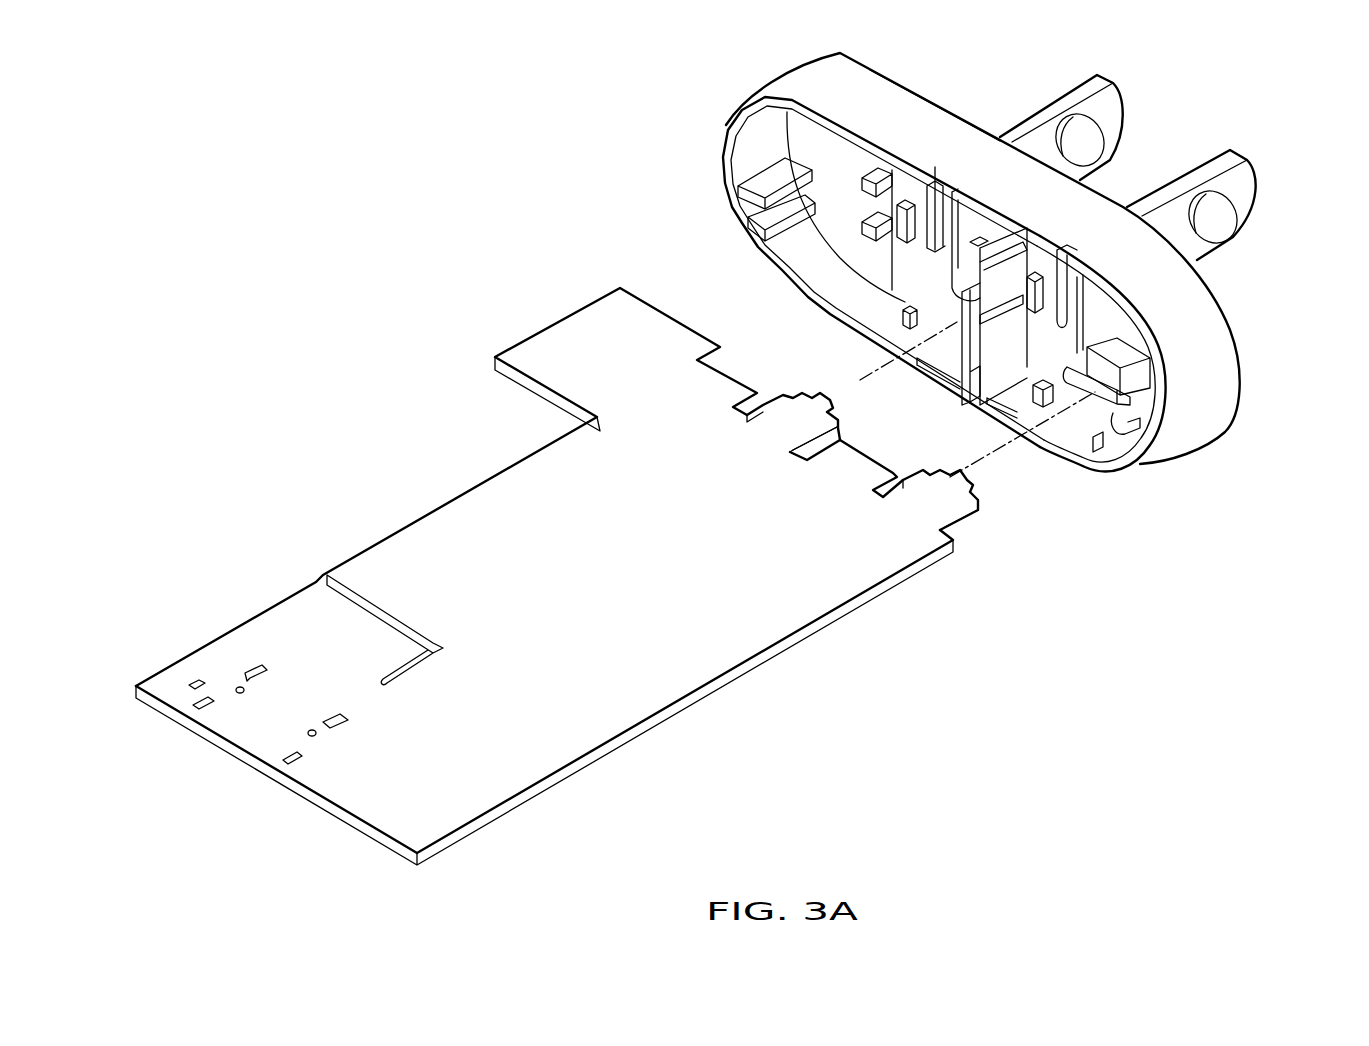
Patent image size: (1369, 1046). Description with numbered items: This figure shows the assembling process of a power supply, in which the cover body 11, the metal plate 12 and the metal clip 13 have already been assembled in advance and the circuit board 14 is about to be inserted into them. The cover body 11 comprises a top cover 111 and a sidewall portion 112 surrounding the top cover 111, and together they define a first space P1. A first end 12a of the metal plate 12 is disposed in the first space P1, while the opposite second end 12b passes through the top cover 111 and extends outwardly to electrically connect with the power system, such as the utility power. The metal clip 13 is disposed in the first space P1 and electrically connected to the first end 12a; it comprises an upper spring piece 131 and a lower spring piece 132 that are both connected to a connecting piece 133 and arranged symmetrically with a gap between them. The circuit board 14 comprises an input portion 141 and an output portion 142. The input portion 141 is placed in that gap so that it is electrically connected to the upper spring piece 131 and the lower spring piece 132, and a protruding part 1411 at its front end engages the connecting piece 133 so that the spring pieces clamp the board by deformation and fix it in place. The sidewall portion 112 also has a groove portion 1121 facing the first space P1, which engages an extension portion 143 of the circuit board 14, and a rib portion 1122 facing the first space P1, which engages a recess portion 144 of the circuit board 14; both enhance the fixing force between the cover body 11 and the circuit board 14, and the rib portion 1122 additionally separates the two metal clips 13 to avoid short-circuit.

The cover body 11 is at (970, 54).
The top cover 111 is at (850, 165).
The sidewall portion 112 is at (920, 120).
The groove portion 1121 is at (757, 208).
The rib portion 1122 is at (978, 383).
The first space P1 is at (792, 238).
The metal plate 12 is at (1160, 182).
The first end 12a is at (1037, 290).
The second end 12b is at (1110, 106).
The metal clip 13 is at (905, 290).
The upper spring piece 131 is at (1107, 393).
The lower spring piece 132 is at (1117, 420).
The connecting piece 133 is at (1057, 343).
The circuit board 14 is at (500, 510).
The input portion 141 is at (787, 427).
The protruding part 1411 is at (830, 410).
The output portion 142 is at (277, 648).
The extension portion 143 is at (593, 345).
The recess portion 144 is at (812, 450).